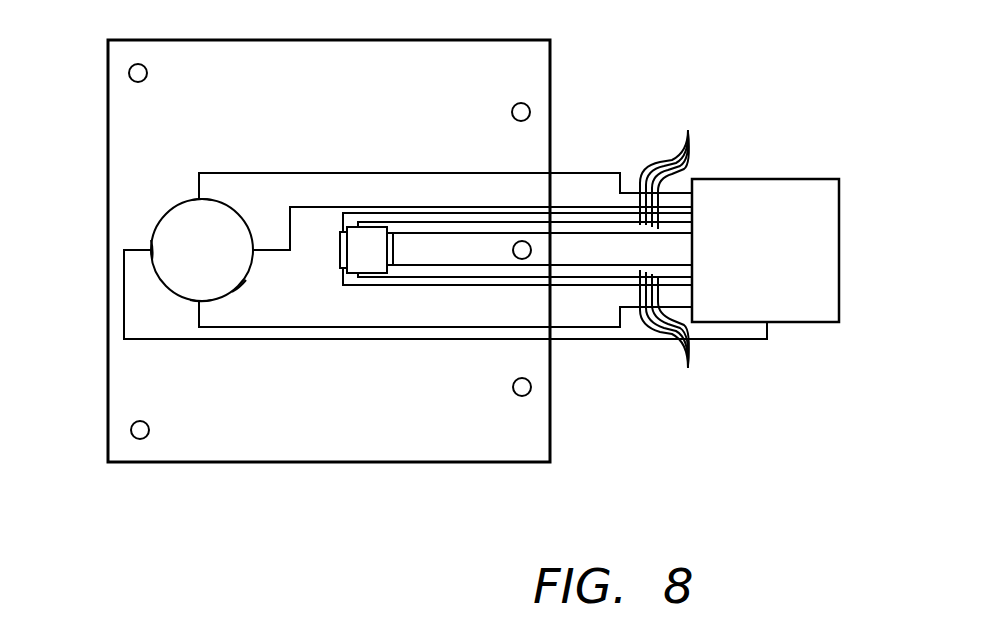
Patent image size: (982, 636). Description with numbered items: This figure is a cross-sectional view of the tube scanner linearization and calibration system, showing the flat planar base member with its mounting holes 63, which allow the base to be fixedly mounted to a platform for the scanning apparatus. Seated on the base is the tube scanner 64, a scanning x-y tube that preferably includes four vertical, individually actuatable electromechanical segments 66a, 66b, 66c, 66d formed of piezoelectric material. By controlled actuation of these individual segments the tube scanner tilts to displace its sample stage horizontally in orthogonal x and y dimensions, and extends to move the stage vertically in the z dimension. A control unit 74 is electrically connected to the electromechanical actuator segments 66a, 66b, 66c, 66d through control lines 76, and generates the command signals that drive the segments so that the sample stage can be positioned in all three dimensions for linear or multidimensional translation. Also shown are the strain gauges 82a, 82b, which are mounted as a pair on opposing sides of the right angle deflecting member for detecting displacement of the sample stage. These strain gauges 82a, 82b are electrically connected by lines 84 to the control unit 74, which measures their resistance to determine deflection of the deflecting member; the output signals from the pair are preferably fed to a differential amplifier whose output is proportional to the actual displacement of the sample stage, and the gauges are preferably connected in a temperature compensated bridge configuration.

The mounting holes 63 is at (129, 77).
The tube scanner 64 is at (165, 213).
The electromechanical segment 66a is at (151, 243).
The electromechanical segment 66b is at (197, 302).
The electromechanical segment 66c is at (238, 287).
The electromechanical segment 66d is at (198, 199).
The control lines 76 is at (320, 207).
The strain gauge 82a is at (396, 247).
The strain gauge 82b is at (370, 226).
The control unit 74 is at (808, 179).
The lines 84 is at (669, 253).